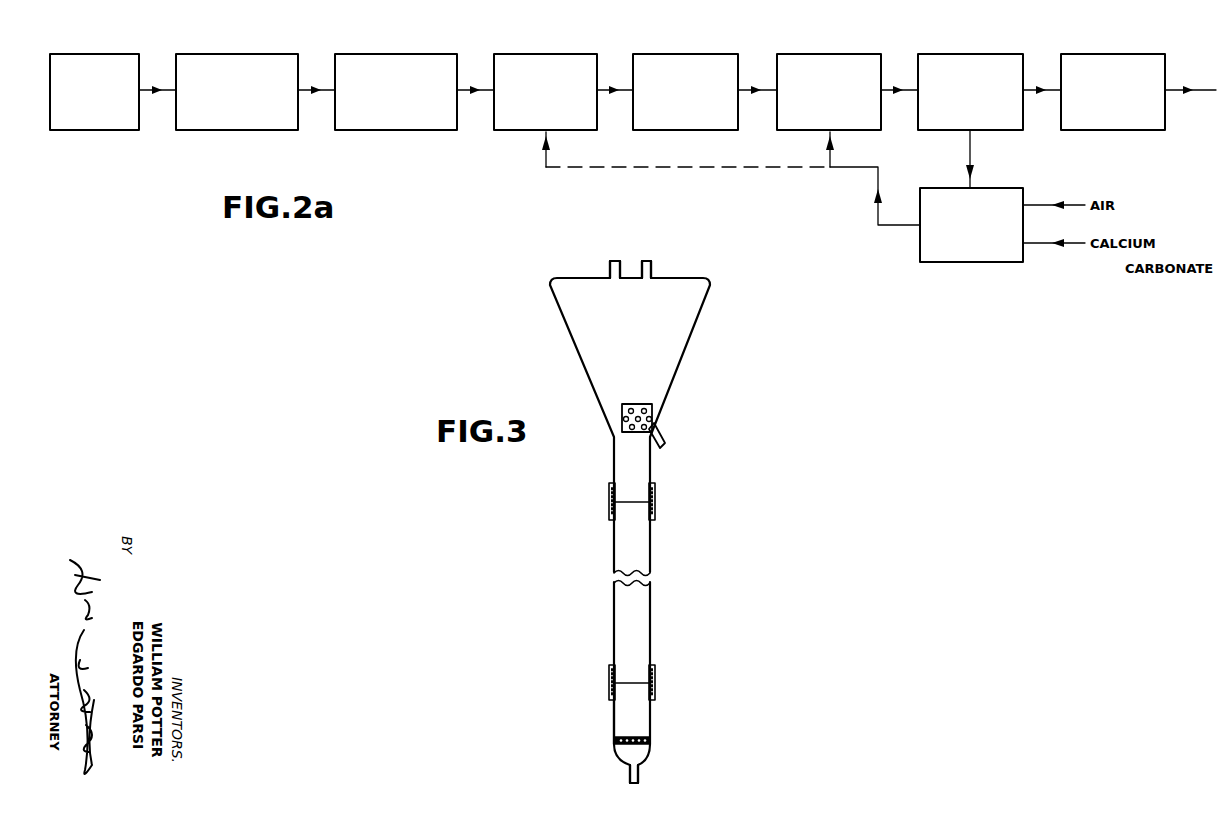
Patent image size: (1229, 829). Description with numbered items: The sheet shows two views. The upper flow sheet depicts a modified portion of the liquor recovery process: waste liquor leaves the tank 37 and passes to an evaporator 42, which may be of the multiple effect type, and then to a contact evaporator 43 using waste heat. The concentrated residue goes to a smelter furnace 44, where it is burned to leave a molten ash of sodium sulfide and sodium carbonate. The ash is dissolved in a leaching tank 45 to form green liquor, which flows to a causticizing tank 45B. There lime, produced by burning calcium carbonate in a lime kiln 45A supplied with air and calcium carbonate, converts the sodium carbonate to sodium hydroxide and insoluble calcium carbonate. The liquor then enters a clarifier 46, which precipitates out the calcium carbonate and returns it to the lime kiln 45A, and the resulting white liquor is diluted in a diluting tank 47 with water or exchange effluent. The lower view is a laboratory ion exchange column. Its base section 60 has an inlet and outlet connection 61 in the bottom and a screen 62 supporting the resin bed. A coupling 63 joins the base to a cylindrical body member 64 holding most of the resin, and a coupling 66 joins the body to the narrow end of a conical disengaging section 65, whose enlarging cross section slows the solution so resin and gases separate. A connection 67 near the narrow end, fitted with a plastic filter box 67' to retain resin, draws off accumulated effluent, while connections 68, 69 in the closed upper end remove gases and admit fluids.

In FIG. 2A, the tank 37 is at (102, 62).
In FIG. 2A, the evaporator 42 is at (254, 62).
In FIG. 2A, the contact evaporator 43 is at (413, 62).
In FIG. 2A, the smelter furnace 44 is at (558, 62).
In FIG. 2A, the leaching tank 45 is at (698, 62).
In FIG. 2A, the lime kiln 45A is at (997, 262).
In FIG. 2A, the causticizing tank 45B is at (840, 62).
In FIG. 2A, the clarifier 46 is at (987, 62).
In FIG. 2A, the diluting tank 47 is at (1125, 62).
In FIG. 3, the base section 60 is at (613, 716).
In FIG. 3, the inlet and outlet connection 61 is at (640, 772).
In FIG. 3, the screen 62 is at (640, 737).
In FIG. 3, the coupling 63 is at (655, 672).
In FIG. 3, the cylindrical body member 64 is at (613, 618).
In FIG. 3, the conical disengaging section 65 is at (568, 340).
In FIG. 3, the coupling 66 is at (655, 495).
In FIG. 3, the connection 67 is at (692, 435).
In FIG. 3, the plastic filter box 67' is at (683, 398).
In FIG. 3, the connection 68 is at (612, 262).
In FIG. 3, the connection 69 is at (648, 262).